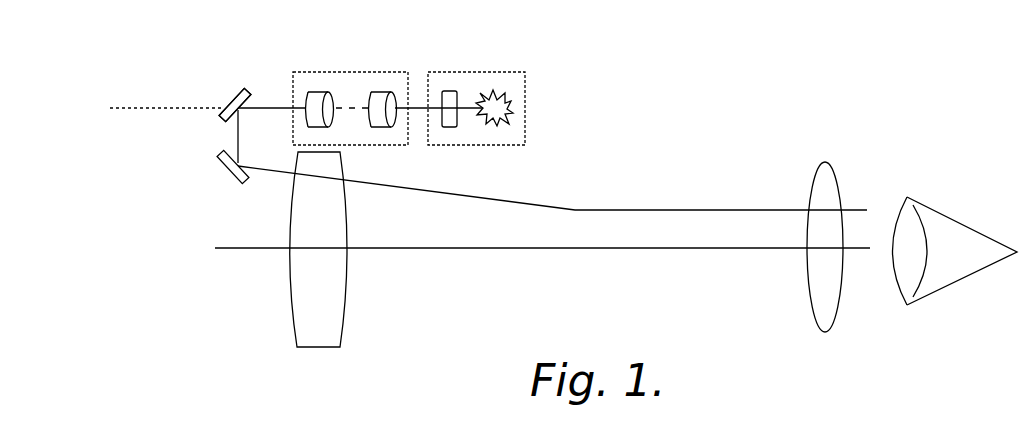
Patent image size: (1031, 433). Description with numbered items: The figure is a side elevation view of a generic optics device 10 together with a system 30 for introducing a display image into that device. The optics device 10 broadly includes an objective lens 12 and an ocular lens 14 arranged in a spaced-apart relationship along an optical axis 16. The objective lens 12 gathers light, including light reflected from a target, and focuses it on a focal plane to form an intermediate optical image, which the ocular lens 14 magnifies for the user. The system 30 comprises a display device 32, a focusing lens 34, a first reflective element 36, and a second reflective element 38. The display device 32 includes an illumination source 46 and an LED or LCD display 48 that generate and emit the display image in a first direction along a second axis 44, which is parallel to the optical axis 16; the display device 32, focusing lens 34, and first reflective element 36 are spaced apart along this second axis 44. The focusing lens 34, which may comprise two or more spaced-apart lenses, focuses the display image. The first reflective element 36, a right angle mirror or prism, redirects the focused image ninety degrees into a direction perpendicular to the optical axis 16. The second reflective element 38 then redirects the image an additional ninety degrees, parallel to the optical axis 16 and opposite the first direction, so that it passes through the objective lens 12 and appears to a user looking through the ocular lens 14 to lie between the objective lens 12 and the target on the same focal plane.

The optics device 10 is at (733, 138).
The objective lens 12 is at (307, 300).
The ocular lens 14 is at (815, 293).
The optical axis 16 is at (215, 248).
The system 30 is at (222, 100).
The display device 32 is at (530, 137).
The focusing lens 34 is at (317, 82).
The first reflective element 36 is at (240, 93).
The second reflective element 38 is at (222, 163).
The second axis 44 is at (110, 110).
The illumination source 46 is at (502, 98).
The LED or LCD display 48 is at (452, 93).